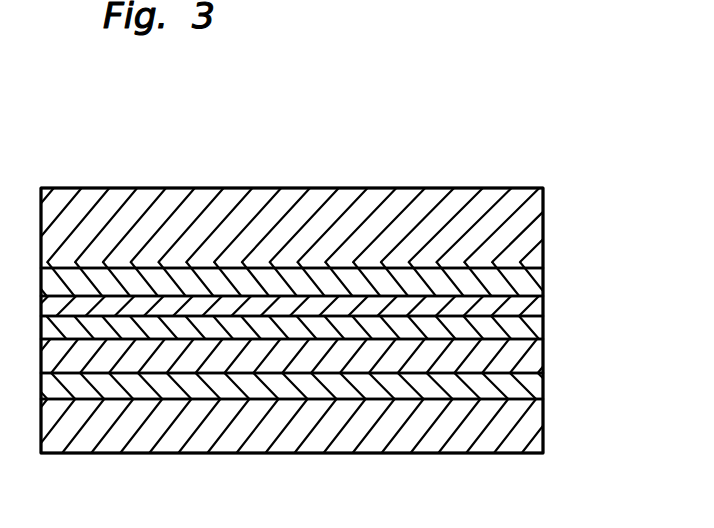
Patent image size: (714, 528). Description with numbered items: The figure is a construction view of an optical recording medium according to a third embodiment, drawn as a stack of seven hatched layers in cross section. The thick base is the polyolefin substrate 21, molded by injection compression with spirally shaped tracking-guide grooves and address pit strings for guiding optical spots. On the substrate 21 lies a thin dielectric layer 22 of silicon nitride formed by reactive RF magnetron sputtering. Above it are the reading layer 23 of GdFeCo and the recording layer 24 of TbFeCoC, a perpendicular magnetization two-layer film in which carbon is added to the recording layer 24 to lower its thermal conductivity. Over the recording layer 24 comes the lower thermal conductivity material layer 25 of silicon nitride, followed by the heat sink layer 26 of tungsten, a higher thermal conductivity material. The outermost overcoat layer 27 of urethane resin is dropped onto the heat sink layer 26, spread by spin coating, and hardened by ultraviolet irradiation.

The polyolefin substrate 21 is at (518, 205).
The dielectric layer 22 is at (543, 243).
The reading layer 23 is at (548, 298).
The recording layer 24 is at (533, 328).
The lower thermal conductivity material layer 25 is at (535, 365).
The heat sink layer 26 is at (537, 387).
The overcoat layer 27 is at (545, 452).